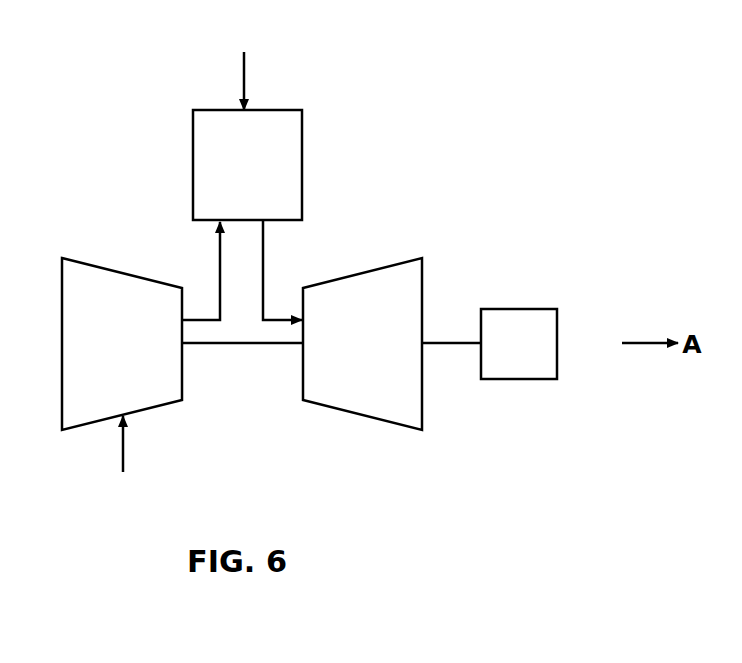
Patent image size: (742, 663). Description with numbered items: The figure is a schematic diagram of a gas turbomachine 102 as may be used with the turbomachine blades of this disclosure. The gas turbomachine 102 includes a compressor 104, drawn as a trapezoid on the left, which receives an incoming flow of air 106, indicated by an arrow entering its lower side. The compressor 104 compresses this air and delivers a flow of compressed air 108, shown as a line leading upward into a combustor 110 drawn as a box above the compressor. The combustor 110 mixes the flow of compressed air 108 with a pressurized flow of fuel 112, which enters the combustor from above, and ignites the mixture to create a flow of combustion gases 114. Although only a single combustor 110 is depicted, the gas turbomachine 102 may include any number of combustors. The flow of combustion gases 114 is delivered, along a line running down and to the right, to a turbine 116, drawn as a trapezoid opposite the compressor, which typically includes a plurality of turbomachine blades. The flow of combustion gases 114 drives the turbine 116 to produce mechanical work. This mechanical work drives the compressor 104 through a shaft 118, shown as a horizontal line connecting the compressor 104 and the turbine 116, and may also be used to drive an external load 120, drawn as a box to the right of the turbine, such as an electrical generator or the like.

The gas turbomachine 102 is at (112, 140).
The compressor 104 is at (96, 360).
The incoming flow of air 106 is at (123, 448).
The flow of compressed air 108 is at (218, 282).
The combustor 110 is at (223, 180).
The pressurized flow of fuel 112 is at (247, 77).
The flow of combustion gases 114 is at (264, 283).
The turbine 116 is at (338, 357).
The shaft 118 is at (250, 344).
The external load 120 is at (494, 357).